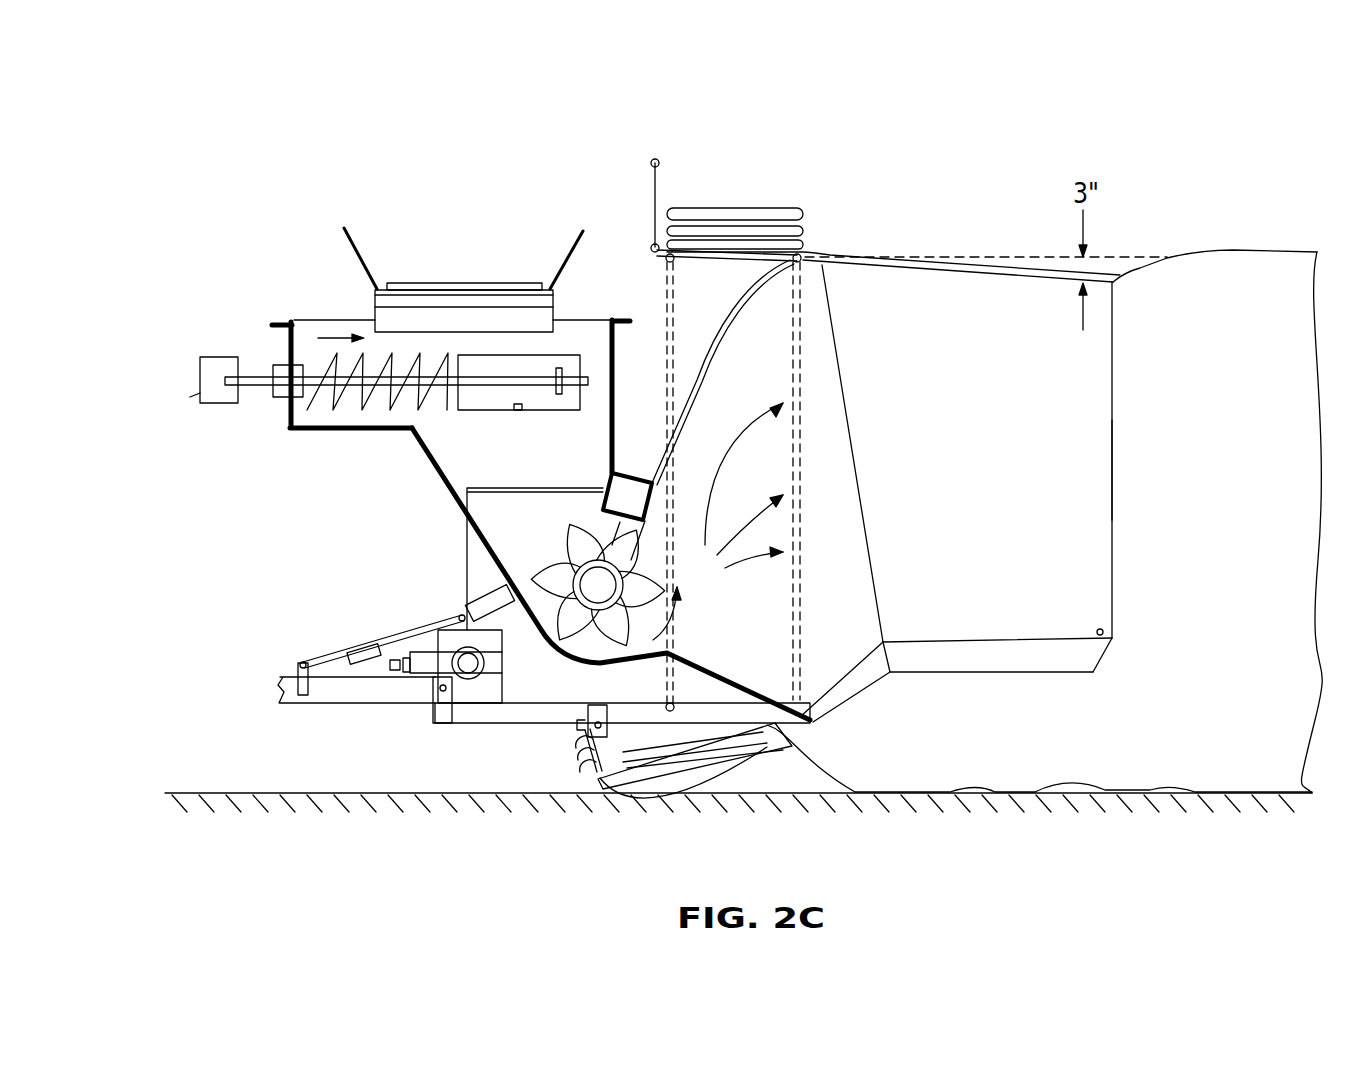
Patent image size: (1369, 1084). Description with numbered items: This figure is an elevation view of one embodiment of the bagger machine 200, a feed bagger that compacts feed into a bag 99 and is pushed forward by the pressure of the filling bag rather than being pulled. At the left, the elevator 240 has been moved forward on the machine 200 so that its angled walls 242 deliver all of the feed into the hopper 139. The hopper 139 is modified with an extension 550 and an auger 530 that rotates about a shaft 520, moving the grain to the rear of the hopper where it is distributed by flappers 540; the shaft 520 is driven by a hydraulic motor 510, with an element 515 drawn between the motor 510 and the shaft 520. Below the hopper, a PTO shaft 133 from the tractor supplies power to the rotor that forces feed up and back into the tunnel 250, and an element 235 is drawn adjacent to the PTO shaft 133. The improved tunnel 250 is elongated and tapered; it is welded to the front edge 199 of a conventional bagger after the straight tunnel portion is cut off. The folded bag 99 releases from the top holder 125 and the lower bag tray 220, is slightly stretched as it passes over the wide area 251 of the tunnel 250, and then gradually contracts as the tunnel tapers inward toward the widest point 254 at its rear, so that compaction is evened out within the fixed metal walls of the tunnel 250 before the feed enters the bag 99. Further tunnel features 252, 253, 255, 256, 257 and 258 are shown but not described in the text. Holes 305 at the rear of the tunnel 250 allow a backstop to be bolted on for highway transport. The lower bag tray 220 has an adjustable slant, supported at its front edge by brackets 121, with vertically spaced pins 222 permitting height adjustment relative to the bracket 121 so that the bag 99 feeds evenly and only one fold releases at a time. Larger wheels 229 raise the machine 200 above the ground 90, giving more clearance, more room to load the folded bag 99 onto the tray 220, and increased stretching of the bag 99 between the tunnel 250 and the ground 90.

The ground 90 is at (290, 790).
The bag 99 is at (762, 208).
The brackets 121 is at (588, 712).
The top holder 125 is at (652, 192).
The power-take-off (PTO) shaft 133 is at (380, 650).
The hopper 139 is at (447, 492).
The front edge 199 is at (800, 623).
The bagger machine 200 is at (888, 186).
The lower bag tray 220 is at (650, 792).
The pins 222 is at (577, 760).
The wheels 229 is at (717, 762).
The hydraulic cylinder 235 is at (433, 615).
The elevator 240 is at (438, 288).
The angled walls 242 is at (355, 235).
The tunnel 250 is at (1027, 479).
The wide area 251 is at (890, 640).
The fabric upper end 252 is at (1123, 282).
The rear wall 253 is at (1102, 303).
The widest point at rear 254 is at (1110, 640).
The trough bottom 255 is at (975, 672).
The lower panel 256 is at (850, 697).
The front wall 257 is at (826, 360).
The rear wall panel 258 is at (1112, 470).
The holes 305 is at (1098, 630).
The hydraulic motor 510 is at (200, 395).
The coupling 515 is at (280, 397).
The shaft 520 is at (552, 382).
The auger 530 is at (425, 410).
The flappers (paddles) 540 is at (558, 355).
The extension 550 is at (295, 432).